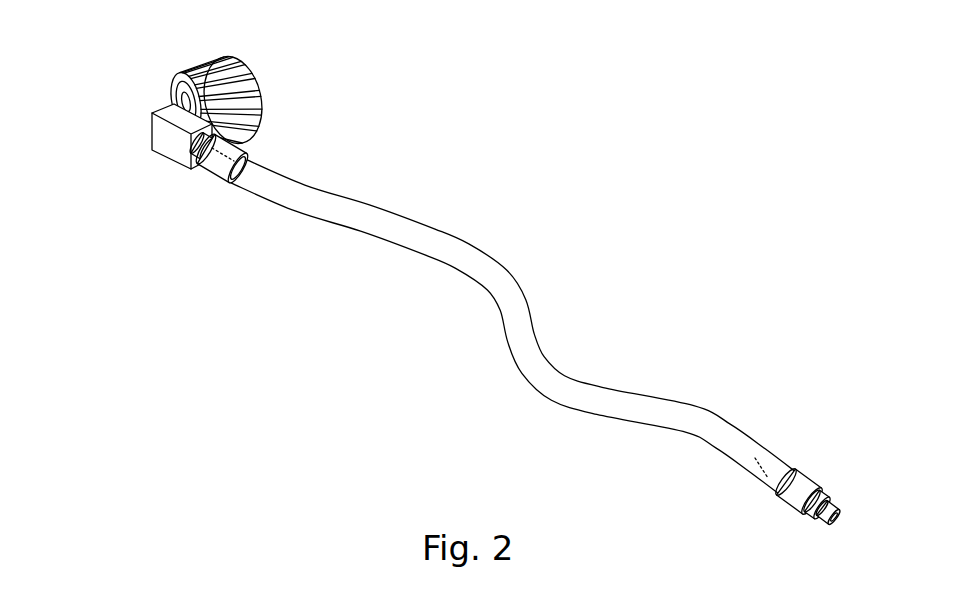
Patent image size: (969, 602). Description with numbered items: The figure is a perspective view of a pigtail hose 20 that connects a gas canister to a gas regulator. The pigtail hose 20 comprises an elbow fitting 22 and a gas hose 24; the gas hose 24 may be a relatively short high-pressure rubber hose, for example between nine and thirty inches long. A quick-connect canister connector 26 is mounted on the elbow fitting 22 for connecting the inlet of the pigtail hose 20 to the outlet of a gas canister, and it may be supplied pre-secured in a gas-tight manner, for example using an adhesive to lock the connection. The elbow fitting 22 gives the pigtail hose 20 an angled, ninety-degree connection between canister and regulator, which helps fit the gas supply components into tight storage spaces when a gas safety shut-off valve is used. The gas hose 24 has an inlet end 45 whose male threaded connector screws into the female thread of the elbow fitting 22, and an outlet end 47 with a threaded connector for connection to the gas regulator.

The pigtail hose 20 is at (762, 78).
The elbow fitting 22 is at (180, 148).
The gas hose 24 is at (318, 207).
The QCC-1 connector 26 is at (253, 100).
The inlet end 45 is at (221, 162).
The outlet end 47 is at (798, 478).